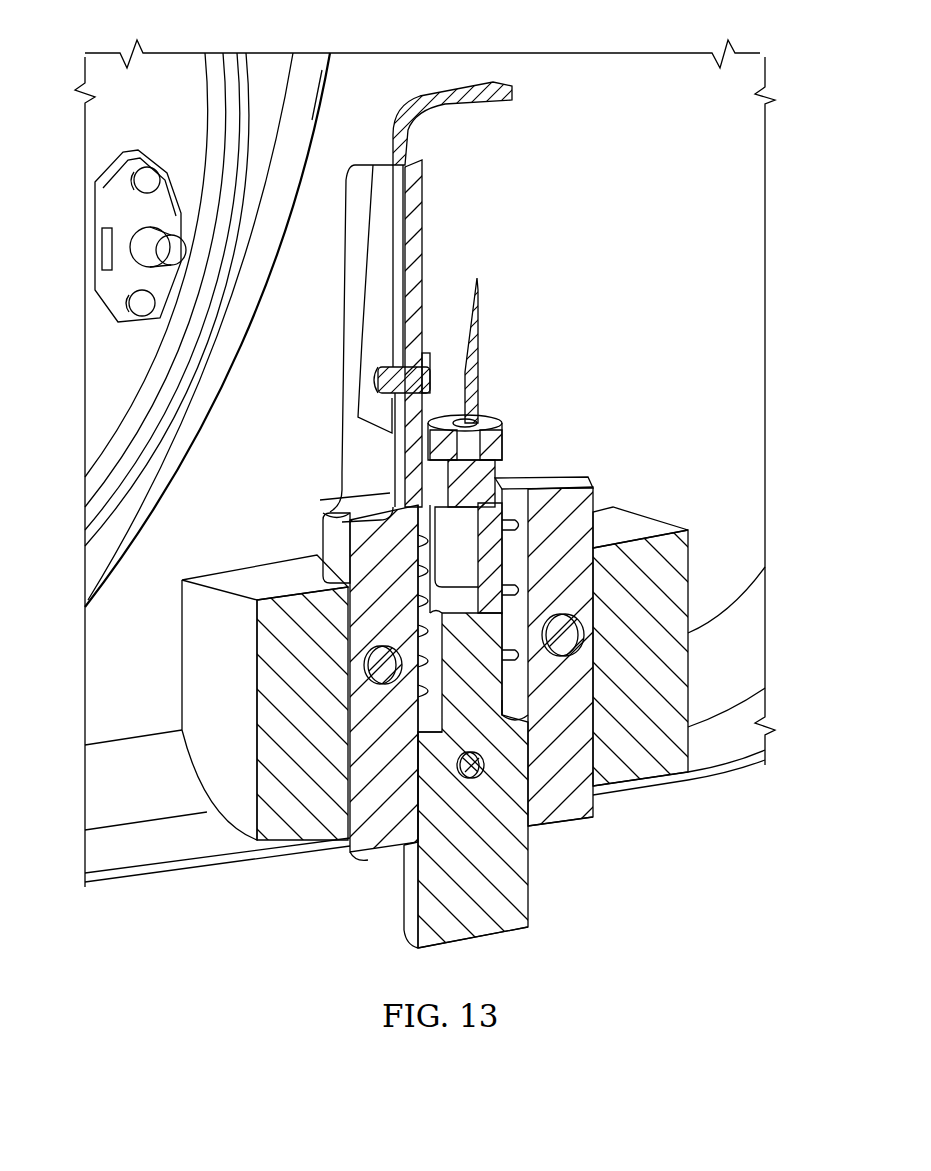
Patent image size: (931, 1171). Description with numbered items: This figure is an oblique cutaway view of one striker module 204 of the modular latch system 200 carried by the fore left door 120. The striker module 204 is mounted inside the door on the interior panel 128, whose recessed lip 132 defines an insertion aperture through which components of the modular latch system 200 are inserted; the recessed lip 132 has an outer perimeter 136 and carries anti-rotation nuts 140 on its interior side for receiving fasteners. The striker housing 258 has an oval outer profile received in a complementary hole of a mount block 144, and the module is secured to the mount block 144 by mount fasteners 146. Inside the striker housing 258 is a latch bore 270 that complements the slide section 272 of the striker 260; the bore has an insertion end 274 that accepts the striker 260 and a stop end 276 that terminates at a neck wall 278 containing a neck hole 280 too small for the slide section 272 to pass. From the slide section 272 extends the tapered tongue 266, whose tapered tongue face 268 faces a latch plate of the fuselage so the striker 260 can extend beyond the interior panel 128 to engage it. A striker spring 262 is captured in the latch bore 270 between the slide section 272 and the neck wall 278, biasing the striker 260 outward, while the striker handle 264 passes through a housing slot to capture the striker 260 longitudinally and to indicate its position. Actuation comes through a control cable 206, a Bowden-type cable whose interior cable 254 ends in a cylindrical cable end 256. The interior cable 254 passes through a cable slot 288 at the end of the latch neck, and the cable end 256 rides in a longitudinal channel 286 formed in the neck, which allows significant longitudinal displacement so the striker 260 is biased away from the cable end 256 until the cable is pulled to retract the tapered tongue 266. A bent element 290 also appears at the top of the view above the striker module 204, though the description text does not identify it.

The fore left door 120 is at (765, 528).
The interior panel 128 is at (765, 312).
The recessed lip 132 is at (160, 72).
The outer perimeter 136 is at (202, 280).
The anti-rotation nuts 140 is at (150, 160).
The mount block 144 is at (642, 520).
The mount fasteners 146 is at (368, 650).
The modular latch system 200 is at (580, 250).
The striker module 204 is at (343, 437).
The control cable 206 is at (197, 440).
The interior cable 254 is at (480, 397).
The cable end 256 is at (497, 488).
The striker housing 258 is at (578, 482).
The striker 260 is at (428, 612).
The striker spring 262 is at (520, 591).
The striker handle 264 is at (470, 778).
The tapered tongue 266 is at (476, 932).
The tapered tongue face 268 is at (405, 902).
The latch bore 270 is at (520, 694).
The slide section 272 is at (422, 786).
The insertion end 274 is at (535, 826).
The stop end 276 is at (522, 527).
The neck wall 278 is at (323, 515).
The neck hole 280 is at (490, 512).
The longitudinal channel 286 is at (425, 478).
The cable slot 288 is at (447, 395).
The bent tab 290 is at (402, 105).